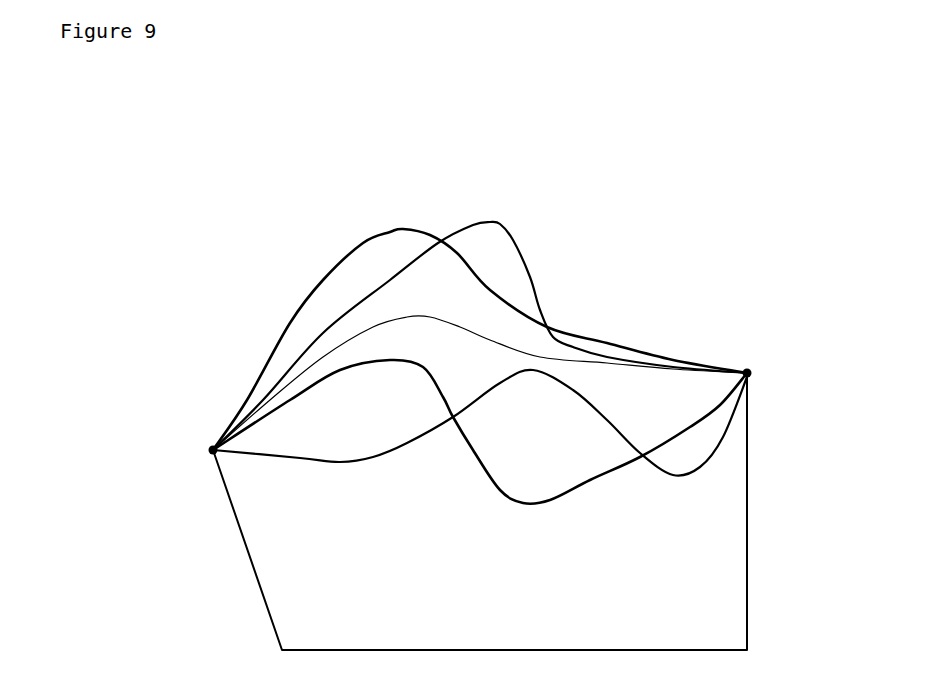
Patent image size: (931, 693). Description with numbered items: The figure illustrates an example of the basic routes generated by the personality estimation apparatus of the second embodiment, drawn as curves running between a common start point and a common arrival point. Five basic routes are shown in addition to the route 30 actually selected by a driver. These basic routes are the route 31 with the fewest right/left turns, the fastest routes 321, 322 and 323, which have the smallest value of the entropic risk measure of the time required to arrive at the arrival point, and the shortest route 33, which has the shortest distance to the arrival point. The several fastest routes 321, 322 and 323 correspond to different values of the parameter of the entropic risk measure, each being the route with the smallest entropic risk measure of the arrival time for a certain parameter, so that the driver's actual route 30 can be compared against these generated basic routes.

The route actually selected by a driver 30 is at (553, 500).
The route with the fewest right/left turns 31 is at (265, 610).
The shortest route 33 is at (338, 463).
The fastest route 321 is at (492, 222).
The fastest route 322 is at (402, 227).
The fastest route 323 is at (433, 317).